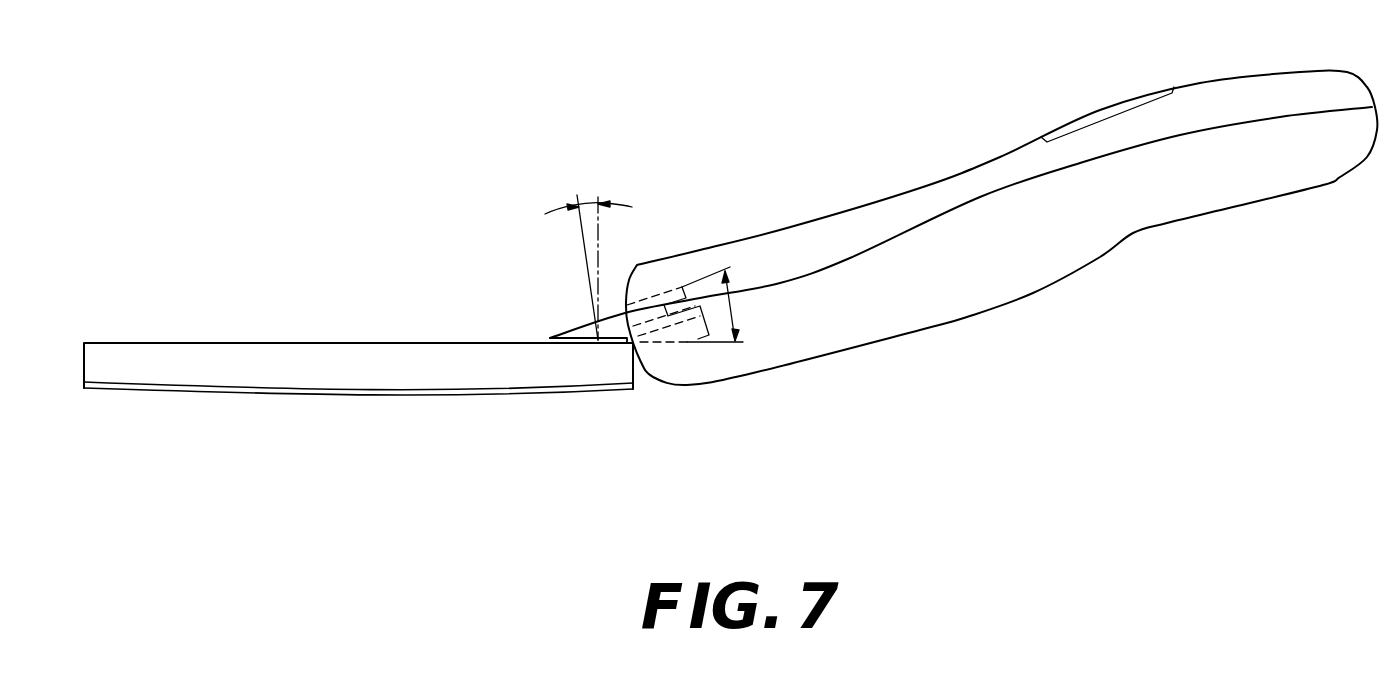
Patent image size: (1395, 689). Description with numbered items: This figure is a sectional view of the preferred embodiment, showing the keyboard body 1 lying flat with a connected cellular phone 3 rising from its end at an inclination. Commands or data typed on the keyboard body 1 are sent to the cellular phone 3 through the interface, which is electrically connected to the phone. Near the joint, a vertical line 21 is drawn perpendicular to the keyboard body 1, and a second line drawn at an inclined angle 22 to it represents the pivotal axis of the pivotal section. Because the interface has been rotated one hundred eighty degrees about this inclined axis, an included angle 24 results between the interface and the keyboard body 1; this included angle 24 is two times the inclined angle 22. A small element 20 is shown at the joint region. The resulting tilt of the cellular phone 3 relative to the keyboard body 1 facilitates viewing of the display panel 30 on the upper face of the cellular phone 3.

The keyboard body 1 is at (323, 372).
The cellular phone 3 is at (1160, 217).
The hinge stopper piece 20 is at (590, 270).
The vertical line 21 is at (600, 240).
The inclined angle 22 is at (585, 202).
The included angle 24 is at (735, 313).
The display panel 30 is at (1102, 113).